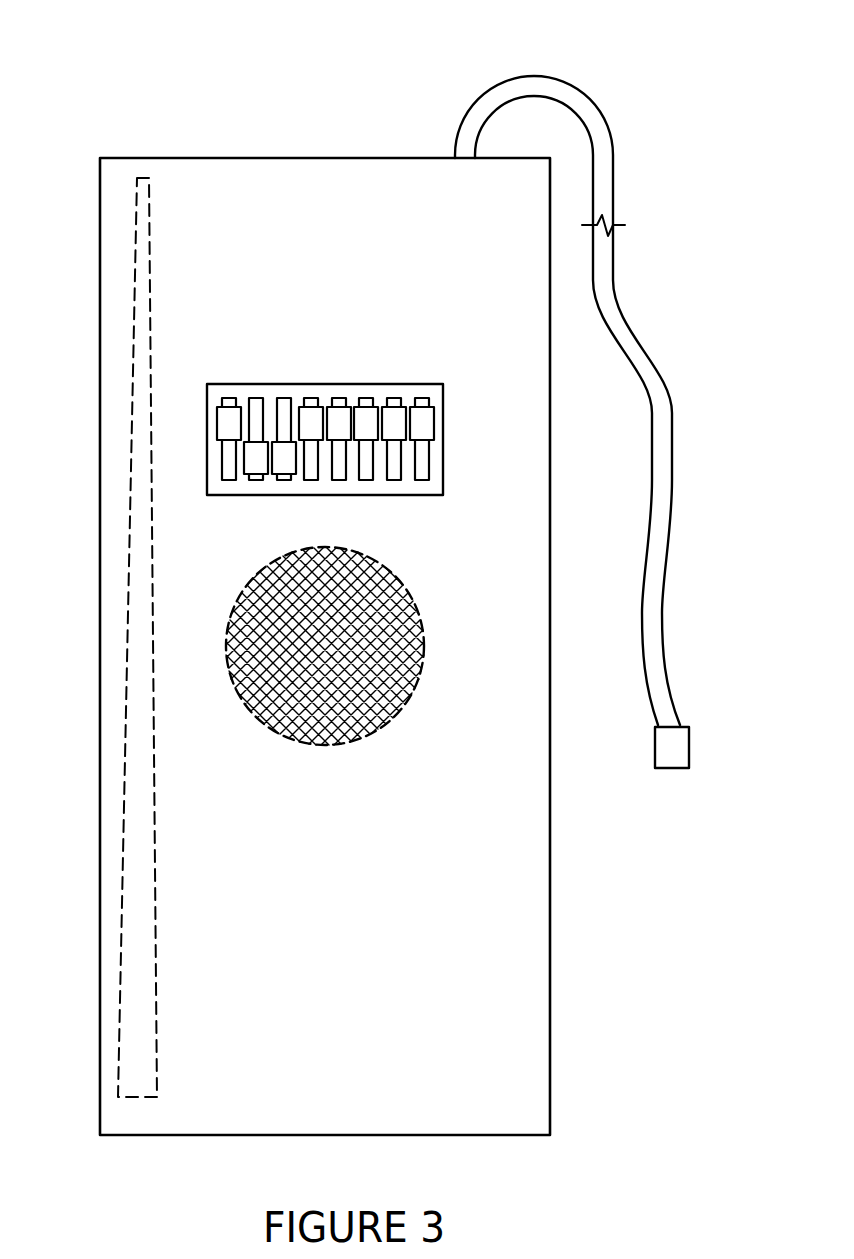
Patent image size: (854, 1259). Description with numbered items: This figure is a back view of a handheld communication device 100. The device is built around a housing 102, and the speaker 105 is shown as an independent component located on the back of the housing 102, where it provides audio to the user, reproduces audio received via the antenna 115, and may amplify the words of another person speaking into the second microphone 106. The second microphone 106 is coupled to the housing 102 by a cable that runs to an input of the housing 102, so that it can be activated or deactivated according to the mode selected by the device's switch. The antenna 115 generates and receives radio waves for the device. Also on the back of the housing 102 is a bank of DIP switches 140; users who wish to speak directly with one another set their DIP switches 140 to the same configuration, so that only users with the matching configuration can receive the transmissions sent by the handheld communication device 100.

The handheld communication device 100 is at (364, 64).
The housing 102 is at (153, 158).
The speaker 105 is at (423, 645).
The second microphone 106 is at (689, 741).
The antenna 115 is at (157, 935).
The DIP switches 140 is at (443, 424).